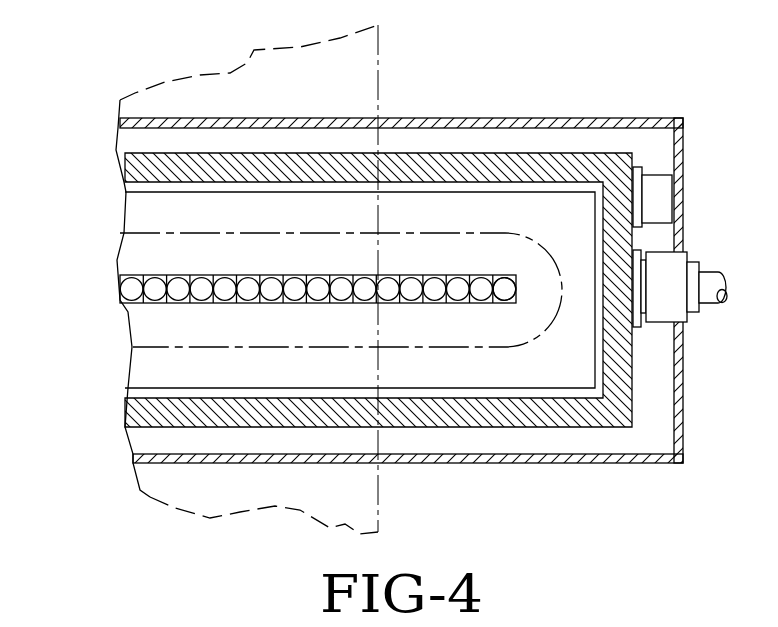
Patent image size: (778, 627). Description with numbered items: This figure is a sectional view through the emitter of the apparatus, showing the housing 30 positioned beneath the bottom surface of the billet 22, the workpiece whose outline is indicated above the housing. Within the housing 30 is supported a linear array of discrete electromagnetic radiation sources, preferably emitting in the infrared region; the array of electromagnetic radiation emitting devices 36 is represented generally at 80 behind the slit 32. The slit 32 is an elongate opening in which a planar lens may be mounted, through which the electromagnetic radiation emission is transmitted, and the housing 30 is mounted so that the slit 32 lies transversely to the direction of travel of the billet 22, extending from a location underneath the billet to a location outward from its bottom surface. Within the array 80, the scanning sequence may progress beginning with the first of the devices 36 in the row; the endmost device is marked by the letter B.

The billet 22 is at (350, 78).
The housing 30 is at (562, 118).
The slit 32 is at (487, 218).
The electromagnetic radiation emitting device 36 is at (507, 289).
The array 80 is at (375, 305).
The detail B is at (507, 289).